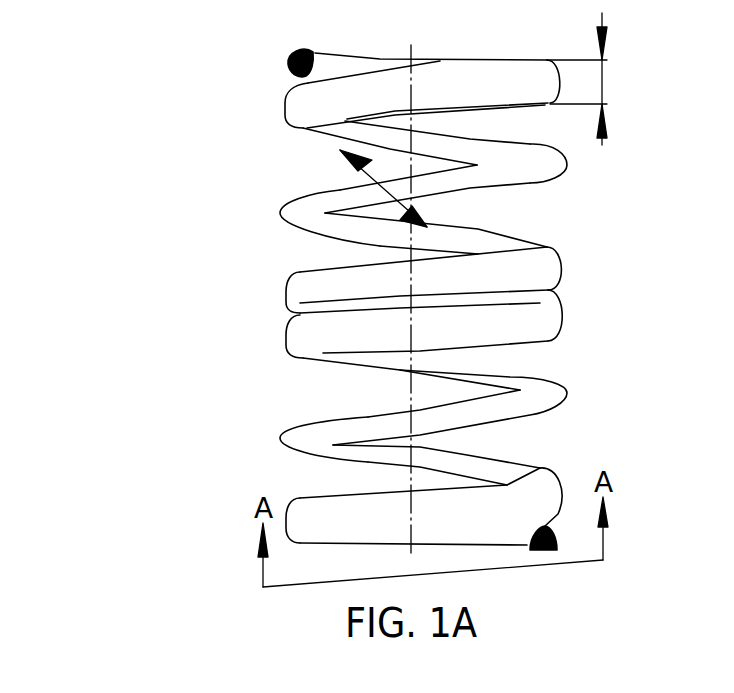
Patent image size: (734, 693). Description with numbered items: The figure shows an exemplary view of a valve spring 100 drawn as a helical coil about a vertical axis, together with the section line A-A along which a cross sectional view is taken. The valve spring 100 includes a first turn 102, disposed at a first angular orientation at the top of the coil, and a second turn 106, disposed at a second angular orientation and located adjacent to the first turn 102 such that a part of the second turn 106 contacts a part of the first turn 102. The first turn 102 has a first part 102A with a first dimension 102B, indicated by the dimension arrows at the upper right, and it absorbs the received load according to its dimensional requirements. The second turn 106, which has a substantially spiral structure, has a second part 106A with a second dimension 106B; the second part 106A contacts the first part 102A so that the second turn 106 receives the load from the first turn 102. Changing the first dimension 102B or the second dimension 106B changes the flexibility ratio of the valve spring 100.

The valve spring 100 is at (379, 284).
The first turn 102 is at (406, 288).
The first part 102A is at (304, 104).
The first dimension 102B is at (604, 82).
The second turn 106 is at (437, 182).
The second part 106A is at (488, 158).
The second dimension 106B is at (340, 188).